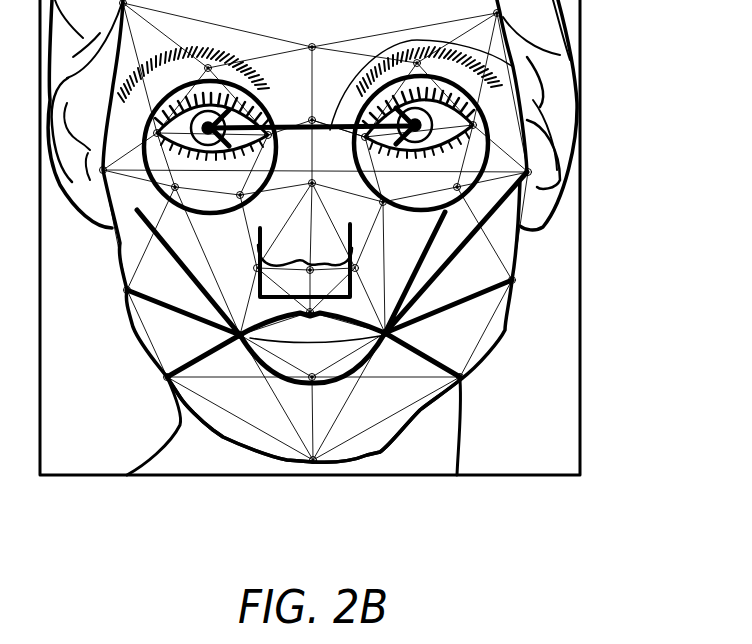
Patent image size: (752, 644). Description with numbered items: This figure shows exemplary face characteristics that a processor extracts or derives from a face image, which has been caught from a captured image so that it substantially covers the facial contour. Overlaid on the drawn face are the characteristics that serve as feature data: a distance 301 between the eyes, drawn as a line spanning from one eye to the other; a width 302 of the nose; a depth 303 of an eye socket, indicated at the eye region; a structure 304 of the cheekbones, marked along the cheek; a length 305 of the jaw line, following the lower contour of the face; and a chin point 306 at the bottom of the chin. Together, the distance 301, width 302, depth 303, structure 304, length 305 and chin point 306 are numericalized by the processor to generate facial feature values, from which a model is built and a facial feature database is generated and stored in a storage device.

The distance between eyes 301 is at (457, 42).
The width of a nose 302 is at (378, 445).
The depth of an eye socket 303 is at (478, 126).
The structure of cheekbones 304 is at (463, 288).
The length of a jaw line 305 is at (222, 438).
The chin point 306 is at (313, 464).